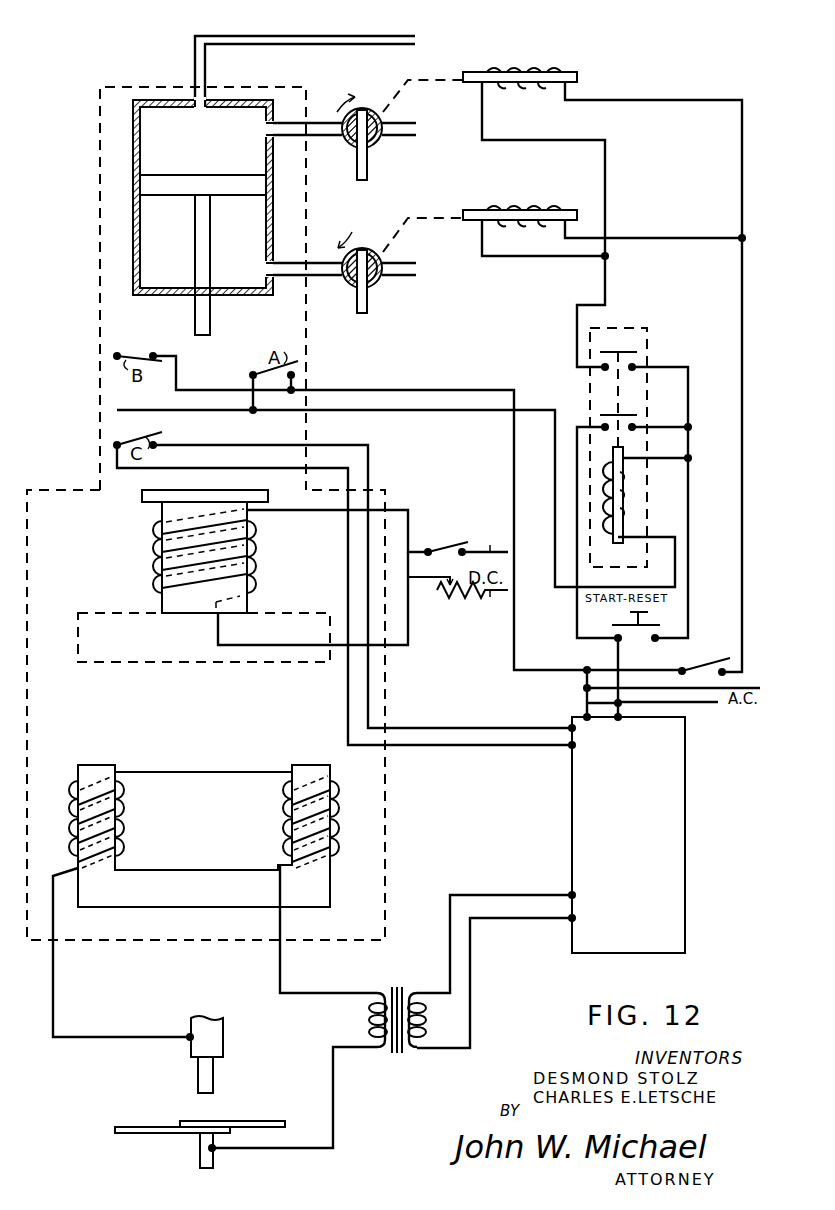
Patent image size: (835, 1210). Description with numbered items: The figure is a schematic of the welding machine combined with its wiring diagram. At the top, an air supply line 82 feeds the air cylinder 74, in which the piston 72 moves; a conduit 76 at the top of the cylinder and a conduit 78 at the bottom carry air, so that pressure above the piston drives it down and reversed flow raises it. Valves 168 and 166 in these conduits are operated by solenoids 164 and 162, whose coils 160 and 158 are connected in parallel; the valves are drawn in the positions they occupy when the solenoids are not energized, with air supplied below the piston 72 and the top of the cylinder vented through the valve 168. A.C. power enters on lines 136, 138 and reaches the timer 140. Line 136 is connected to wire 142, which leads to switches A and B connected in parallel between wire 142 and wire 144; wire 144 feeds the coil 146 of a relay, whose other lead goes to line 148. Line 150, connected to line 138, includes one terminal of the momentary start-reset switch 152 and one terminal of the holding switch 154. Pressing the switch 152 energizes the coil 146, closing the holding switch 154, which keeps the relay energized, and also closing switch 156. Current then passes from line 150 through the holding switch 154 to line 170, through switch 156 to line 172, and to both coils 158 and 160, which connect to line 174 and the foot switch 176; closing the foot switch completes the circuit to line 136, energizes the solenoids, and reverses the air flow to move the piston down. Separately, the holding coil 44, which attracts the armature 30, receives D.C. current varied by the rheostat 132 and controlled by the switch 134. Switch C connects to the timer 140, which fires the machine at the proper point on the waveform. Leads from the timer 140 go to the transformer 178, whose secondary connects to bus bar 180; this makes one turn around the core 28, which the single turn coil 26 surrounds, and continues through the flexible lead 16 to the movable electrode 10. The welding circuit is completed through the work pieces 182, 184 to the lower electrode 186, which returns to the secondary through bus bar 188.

The supply pipe 82 is at (278, 36).
The air cylinder 74 is at (211, 151).
The piston 72 is at (178, 196).
The conduit 76 is at (320, 136).
The conduit 78 is at (320, 277).
The valve 168 is at (366, 110).
The valve 166 is at (366, 253).
The solenoid 164 is at (508, 54).
The coil 160 is at (525, 64).
The solenoid 162 is at (500, 196).
The coil 158 is at (528, 202).
The line 172 is at (575, 141).
The switch 156 is at (637, 350).
The holding switch 154 is at (627, 414).
The line 170 is at (688, 397).
The line 174 is at (742, 458).
The coil 146 is at (624, 491).
The line 148 is at (690, 549).
The start-reset switch 152 is at (628, 625).
The line 150 is at (618, 654).
The foot switch 176 is at (705, 659).
The line 136 is at (712, 704).
The line 138 is at (750, 694).
The timer 140 is at (648, 842).
The wire 142 is at (403, 388).
The wire 144 is at (457, 410).
The switch 134 is at (450, 543).
The rheostat 132 is at (363, 598).
The holding coil 44 is at (162, 565).
The armature 30 is at (108, 665).
The single turn coil 26 is at (120, 810).
The core 28 is at (193, 884).
The flexible braided bus 16 is at (88, 1036).
The movable electrode 10 is at (196, 1073).
The bus bar 180 is at (316, 985).
The transformer 178 is at (403, 981).
The work piece 182 is at (258, 1120).
The work piece 184 is at (134, 1134).
The lower electrode 186 is at (214, 1159).
The bus bar 188 is at (335, 1108).